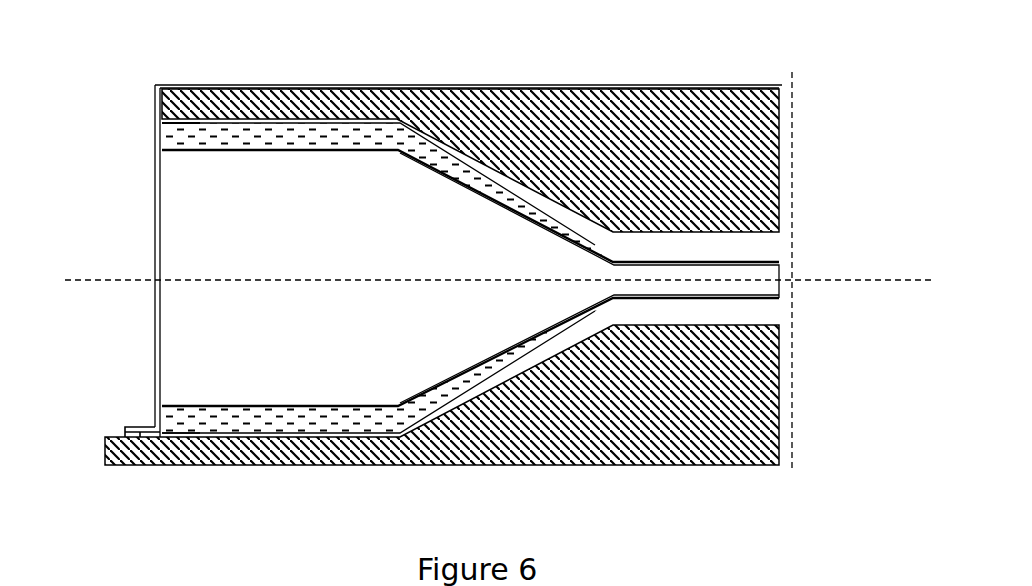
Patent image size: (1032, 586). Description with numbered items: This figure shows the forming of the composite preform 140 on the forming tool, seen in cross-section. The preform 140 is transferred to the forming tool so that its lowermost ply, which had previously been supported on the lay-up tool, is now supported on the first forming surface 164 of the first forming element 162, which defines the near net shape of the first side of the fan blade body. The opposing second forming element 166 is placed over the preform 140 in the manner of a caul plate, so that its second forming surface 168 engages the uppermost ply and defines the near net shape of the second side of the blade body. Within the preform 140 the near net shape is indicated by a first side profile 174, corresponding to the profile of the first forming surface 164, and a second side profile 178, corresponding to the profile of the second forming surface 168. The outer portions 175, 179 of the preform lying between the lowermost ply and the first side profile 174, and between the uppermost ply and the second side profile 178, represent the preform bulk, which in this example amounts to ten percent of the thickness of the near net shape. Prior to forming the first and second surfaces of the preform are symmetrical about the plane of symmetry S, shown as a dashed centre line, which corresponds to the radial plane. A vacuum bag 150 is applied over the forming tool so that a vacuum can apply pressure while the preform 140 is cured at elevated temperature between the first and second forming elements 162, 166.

The preform 140 is at (200, 215).
The vacuum bag 150 is at (585, 87).
The first forming element 162 is at (562, 457).
The first forming surface 164 is at (575, 342).
The second forming element 166 is at (643, 120).
The second forming surface 168 is at (567, 203).
The first side profile 174 is at (255, 406).
The outer portion 175 is at (160, 415).
The second side profile 178 is at (287, 150).
The outer portion 179 is at (167, 133).
The plane of symmetry S is at (862, 280).